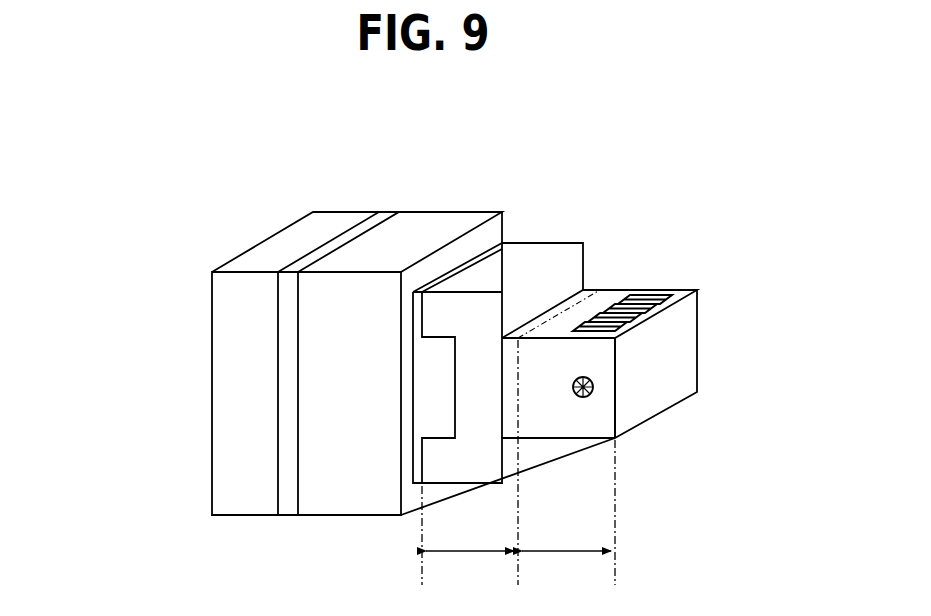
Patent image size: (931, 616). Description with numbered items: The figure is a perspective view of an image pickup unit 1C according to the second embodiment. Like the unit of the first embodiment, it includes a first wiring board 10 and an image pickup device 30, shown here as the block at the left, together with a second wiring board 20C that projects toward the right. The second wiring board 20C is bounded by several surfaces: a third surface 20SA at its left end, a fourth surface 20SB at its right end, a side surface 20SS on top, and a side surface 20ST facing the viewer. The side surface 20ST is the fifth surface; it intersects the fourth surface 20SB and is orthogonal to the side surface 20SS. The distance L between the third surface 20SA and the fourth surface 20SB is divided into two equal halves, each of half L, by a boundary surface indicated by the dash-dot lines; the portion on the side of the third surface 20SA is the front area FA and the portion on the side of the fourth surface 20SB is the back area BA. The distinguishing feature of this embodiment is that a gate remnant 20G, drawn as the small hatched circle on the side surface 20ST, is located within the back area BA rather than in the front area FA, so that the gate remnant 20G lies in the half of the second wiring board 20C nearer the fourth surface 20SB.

The image pickup unit 1C is at (131, 219).
The first wiring board 10 is at (445, 211).
The image pickup device 30 is at (345, 211).
The second wiring board 20C is at (567, 243).
The side surface 20SS is at (606, 287).
The third surface 20SA is at (409, 468).
The fourth surface 20SB is at (648, 403).
The side surface 20ST is at (582, 432).
The gate remnant 20G is at (593, 387).
The front area FA is at (470, 466).
The back area BA is at (568, 516).